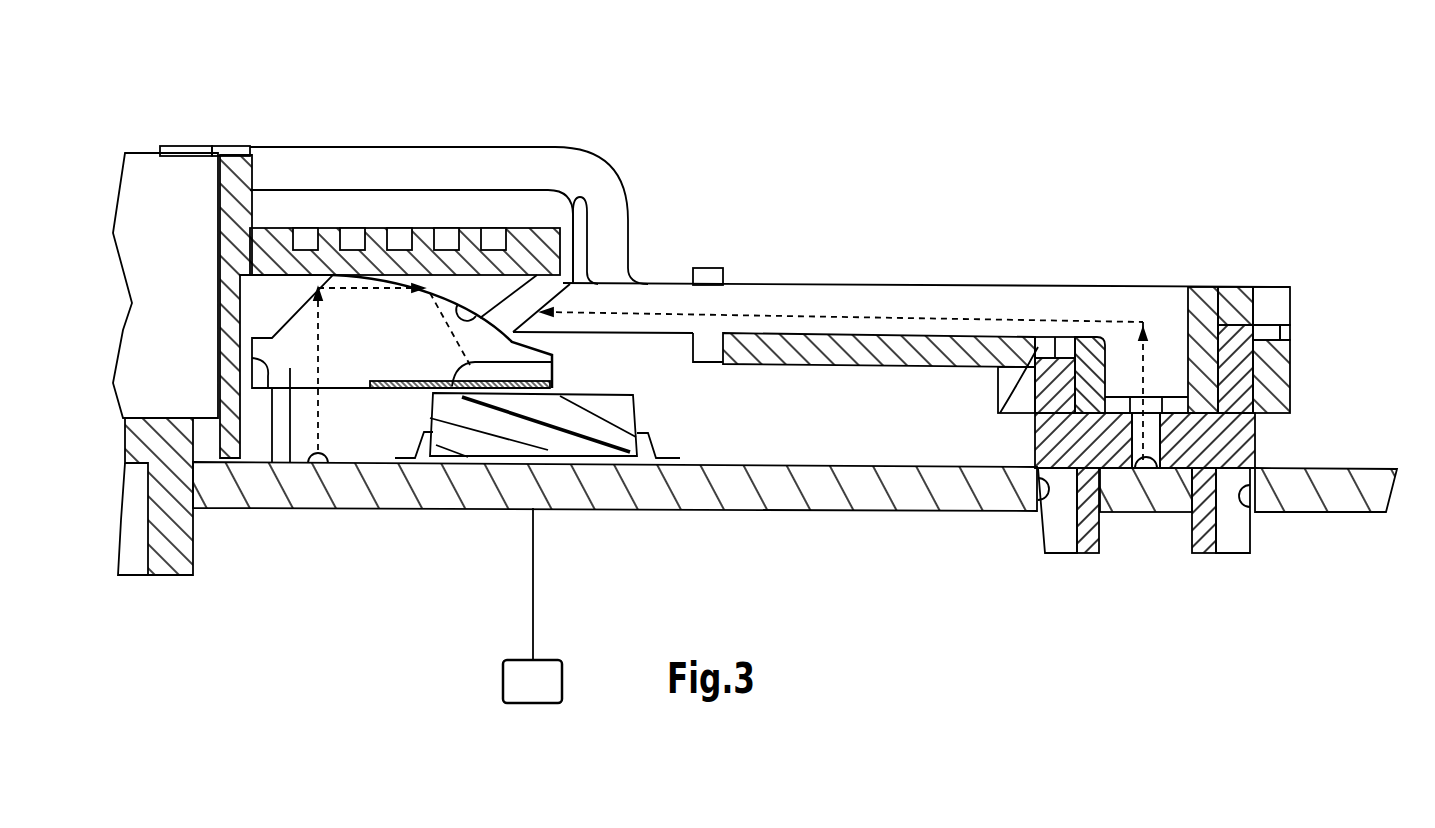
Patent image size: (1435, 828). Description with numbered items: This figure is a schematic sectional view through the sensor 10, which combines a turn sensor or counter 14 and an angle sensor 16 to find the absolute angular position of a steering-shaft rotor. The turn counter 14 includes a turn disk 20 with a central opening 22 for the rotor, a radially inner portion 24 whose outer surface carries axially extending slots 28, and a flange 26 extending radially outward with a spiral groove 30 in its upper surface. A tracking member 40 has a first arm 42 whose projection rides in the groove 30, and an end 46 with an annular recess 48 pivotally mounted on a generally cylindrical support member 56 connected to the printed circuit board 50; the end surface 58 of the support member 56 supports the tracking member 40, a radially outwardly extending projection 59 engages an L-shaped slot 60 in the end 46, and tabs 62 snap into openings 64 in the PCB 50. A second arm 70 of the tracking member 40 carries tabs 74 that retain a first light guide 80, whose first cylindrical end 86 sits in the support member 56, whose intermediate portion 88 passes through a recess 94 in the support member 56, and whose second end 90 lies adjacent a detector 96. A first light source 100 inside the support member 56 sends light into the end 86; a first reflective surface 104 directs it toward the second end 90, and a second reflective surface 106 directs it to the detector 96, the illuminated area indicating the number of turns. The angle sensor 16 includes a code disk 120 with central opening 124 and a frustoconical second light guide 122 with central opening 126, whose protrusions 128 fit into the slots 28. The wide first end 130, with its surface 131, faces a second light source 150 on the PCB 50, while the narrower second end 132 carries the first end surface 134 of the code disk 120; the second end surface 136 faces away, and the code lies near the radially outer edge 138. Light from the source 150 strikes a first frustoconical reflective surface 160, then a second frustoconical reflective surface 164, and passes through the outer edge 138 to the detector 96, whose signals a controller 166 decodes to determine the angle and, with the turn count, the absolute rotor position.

The sensor 10 is at (987, 158).
The turn sensor or counter 14 is at (1208, 232).
The angle sensor 16 is at (343, 563).
The turn disk 20 is at (240, 210).
The central opening 22 is at (172, 188).
The radially inner portion 24 is at (228, 462).
The flange 26 is at (528, 255).
The slots 28 is at (245, 352).
The spiral groove 30 is at (395, 225).
The tracking member 40 is at (1296, 330).
The first arm 42 is at (440, 165).
The end 46 is at (1280, 290).
The annular recess 48 is at (1178, 287).
The printed circuit board (PCB) 50 is at (1360, 485).
The support member 56 is at (1250, 447).
The end surface 58 is at (1233, 290).
The radially outwardly extending projection 59 is at (1290, 318).
The L-shaped slot 60 is at (1285, 310).
The tabs 62 is at (1090, 543).
The openings 64 is at (1040, 492).
The second arm 70 is at (765, 365).
The tabs 74 is at (725, 268).
The first light guide 80 is at (878, 300).
The first cylindrical end 86 is at (1145, 458).
The intermediate portion 88 is at (978, 283).
The second end 90 is at (567, 287).
The recess 94 is at (998, 398).
The detector 96 is at (497, 425).
The first photo emitter or light source 100 is at (1152, 462).
The first reflective surface 104 is at (1140, 350).
The second reflective surface 106 is at (530, 300).
The code disk 120 is at (385, 392).
The second light guide 122 is at (335, 320).
The central opening 124 is at (375, 381).
The central opening 126 is at (217, 327).
The protrusions 128 is at (255, 385).
The first end 130 is at (290, 375).
The surface 131 is at (338, 395).
The second end 132 is at (460, 212).
The first end surface 134 is at (552, 362).
The second end surface 136 is at (425, 465).
The radially outer edge 138 is at (540, 410).
The second photo emitter or light source 150 is at (318, 458).
The first frustoconical reflective surface 160 is at (258, 240).
The second frustoconical reflective surface 164 is at (513, 330).
The controller 166 is at (525, 685).